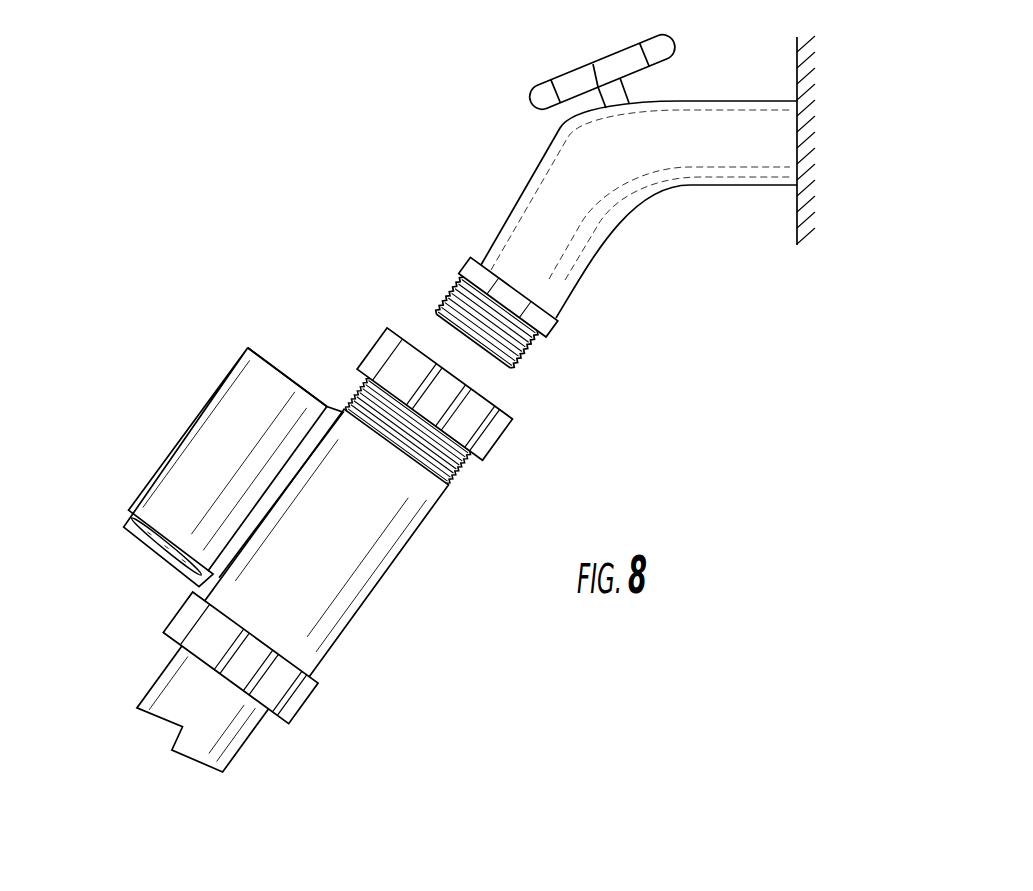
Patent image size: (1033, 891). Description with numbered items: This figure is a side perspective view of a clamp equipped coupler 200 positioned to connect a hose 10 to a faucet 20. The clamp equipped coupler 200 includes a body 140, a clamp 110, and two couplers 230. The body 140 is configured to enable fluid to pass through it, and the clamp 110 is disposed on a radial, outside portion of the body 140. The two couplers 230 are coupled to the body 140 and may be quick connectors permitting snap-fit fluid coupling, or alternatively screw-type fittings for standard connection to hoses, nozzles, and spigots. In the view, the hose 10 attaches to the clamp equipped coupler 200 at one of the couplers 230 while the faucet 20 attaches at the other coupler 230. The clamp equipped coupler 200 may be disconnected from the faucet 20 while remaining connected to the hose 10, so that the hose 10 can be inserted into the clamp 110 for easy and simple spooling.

The faucet 20 is at (528, 183).
The hose 10 is at (155, 677).
The body 140 is at (380, 579).
The couplers 230 is at (498, 441).
The clamp equipped coupler 200 is at (148, 430).
The clamp 110 is at (287, 375).